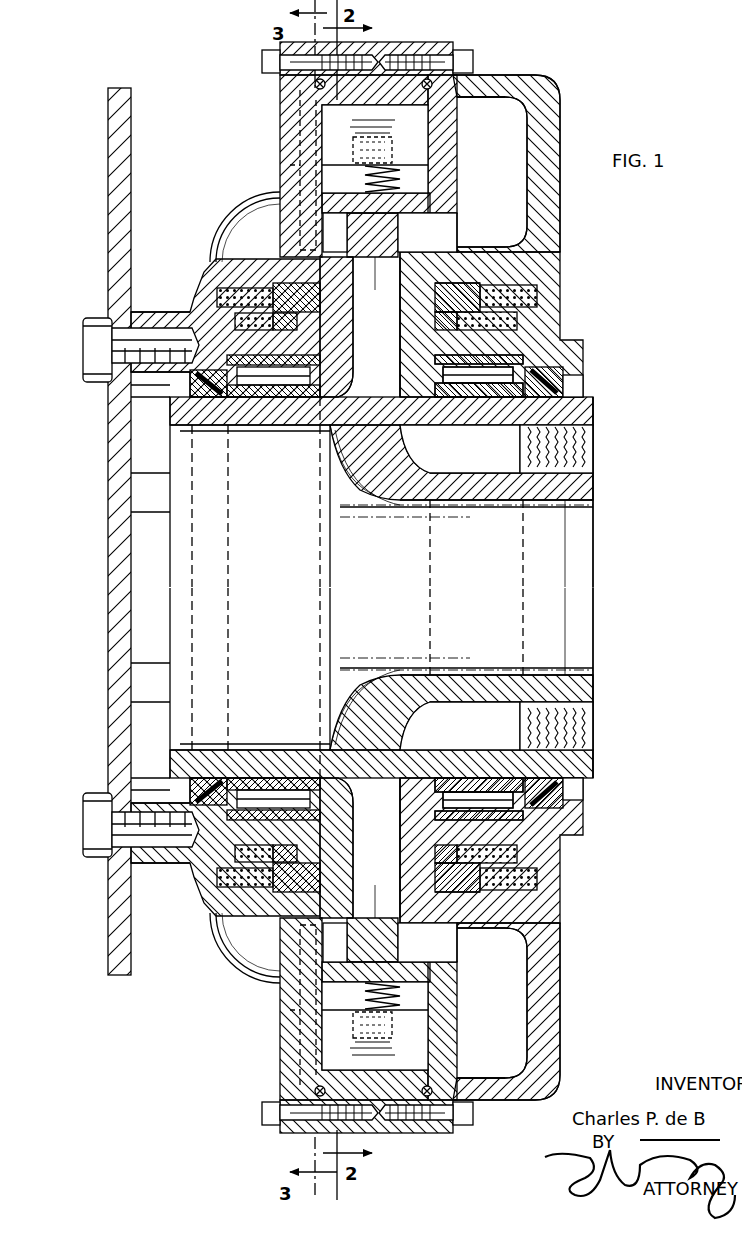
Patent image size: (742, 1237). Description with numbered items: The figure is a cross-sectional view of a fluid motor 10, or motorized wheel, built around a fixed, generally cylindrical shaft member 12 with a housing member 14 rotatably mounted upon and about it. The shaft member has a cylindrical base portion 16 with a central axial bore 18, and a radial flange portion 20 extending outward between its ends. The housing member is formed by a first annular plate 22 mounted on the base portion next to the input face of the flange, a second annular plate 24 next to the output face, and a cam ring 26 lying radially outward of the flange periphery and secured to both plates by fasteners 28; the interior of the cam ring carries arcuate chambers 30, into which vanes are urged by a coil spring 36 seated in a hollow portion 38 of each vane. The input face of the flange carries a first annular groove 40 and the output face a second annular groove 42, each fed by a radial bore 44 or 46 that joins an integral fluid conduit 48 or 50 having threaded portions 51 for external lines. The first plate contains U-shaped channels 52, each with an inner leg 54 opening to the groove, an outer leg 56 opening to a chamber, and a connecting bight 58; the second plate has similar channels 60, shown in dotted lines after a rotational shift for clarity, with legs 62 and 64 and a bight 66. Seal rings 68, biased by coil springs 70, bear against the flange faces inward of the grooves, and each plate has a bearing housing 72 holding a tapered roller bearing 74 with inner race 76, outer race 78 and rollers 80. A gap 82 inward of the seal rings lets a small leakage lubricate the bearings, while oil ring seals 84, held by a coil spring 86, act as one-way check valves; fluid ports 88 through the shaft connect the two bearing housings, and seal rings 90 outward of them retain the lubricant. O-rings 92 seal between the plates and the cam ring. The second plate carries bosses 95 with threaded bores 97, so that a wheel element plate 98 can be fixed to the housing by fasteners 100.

The fluid motor 10 is at (600, 590).
The shaft member 12 is at (502, 506).
The housing member 14 is at (562, 250).
The base portion 16 is at (275, 427).
The axial bore 18 is at (269, 595).
The flange portion 20 is at (355, 290).
The first annular plate 22 is at (565, 318).
The second annular plate 24 is at (278, 108).
The cam ring 26 is at (412, 42).
The fasteners 28 is at (262, 60).
The chambers 30 is at (378, 118).
The coil spring 36 is at (388, 183).
The hollow portion 38 is at (393, 140).
The first annular groove 40 is at (418, 230).
The second annular groove 42 is at (340, 232).
The radial bore 44 is at (394, 338).
The radial bore 46 is at (391, 806).
The fluid conduit 48 is at (491, 468).
The fluid conduit 50 is at (481, 726).
The threaded portions 51 is at (582, 447).
The channels 52 is at (512, 138).
The leg 54 is at (460, 236).
The leg 56 is at (487, 130).
The bight 58 is at (509, 183).
The channels 60 is at (300, 140).
The leg 62 is at (300, 222).
The leg 64 is at (359, 130).
The bight 66 is at (290, 166).
The seal rings 68 is at (430, 300).
The coil springs 70 is at (245, 286).
The bearing housings 72 is at (243, 366).
The anti-friction bearings 74 is at (430, 380).
The inner race 76 is at (462, 405).
The outer race 78 is at (455, 400).
The rollers 80 is at (487, 400).
The gap 82 is at (432, 360).
The oil ring seals 84 is at (432, 338).
The coil spring 86 is at (232, 316).
The fluid ports 88 is at (392, 522).
The seal rings 90 is at (225, 540).
The O-rings 92 is at (428, 88).
The bosses 95 is at (133, 388).
The threaded bores 97 is at (148, 335).
The wheel element plate 98 is at (106, 620).
The fasteners 100 is at (83, 356).